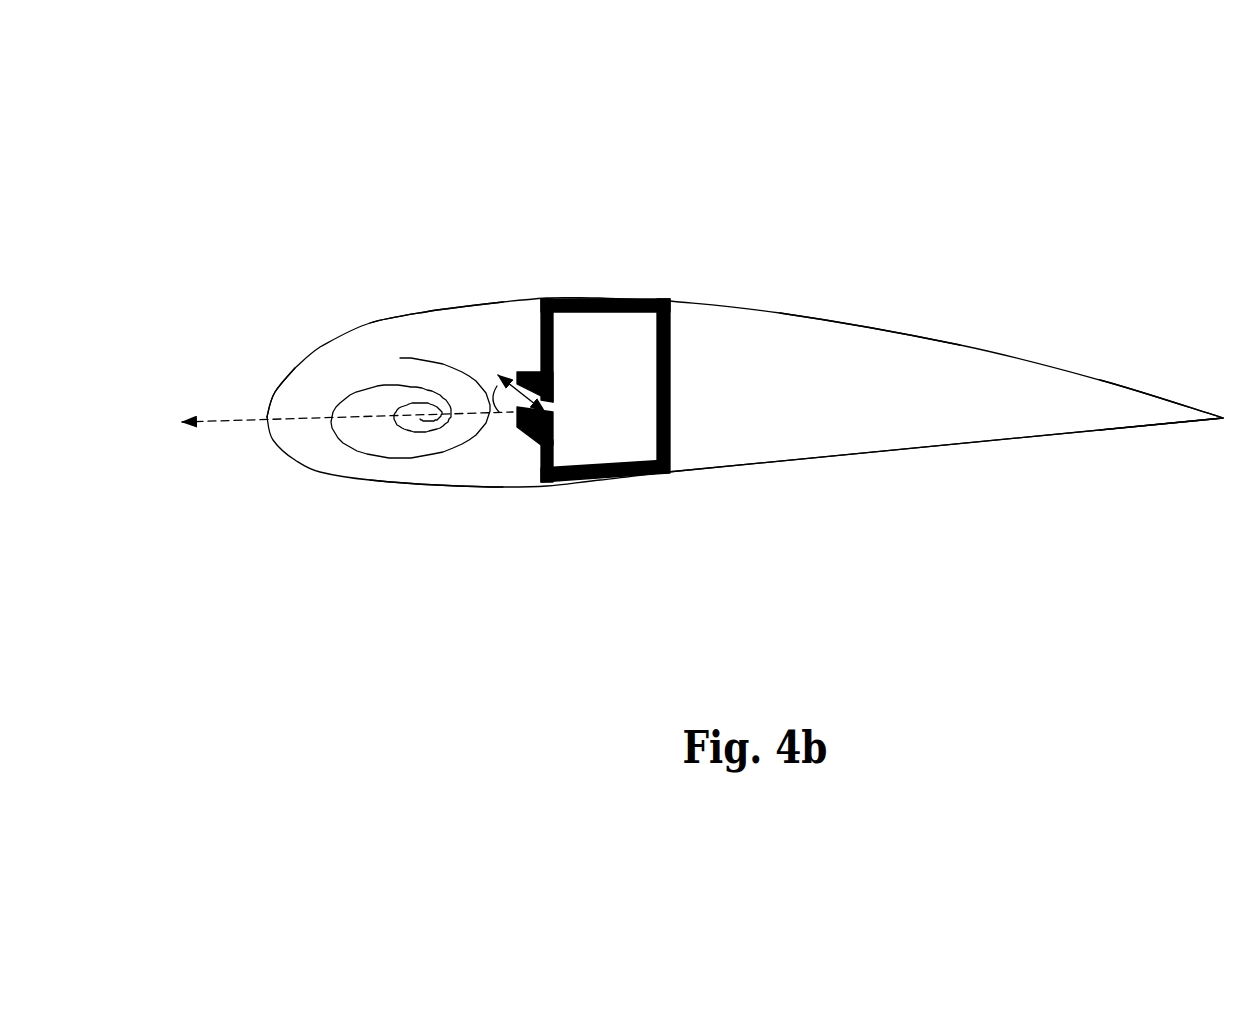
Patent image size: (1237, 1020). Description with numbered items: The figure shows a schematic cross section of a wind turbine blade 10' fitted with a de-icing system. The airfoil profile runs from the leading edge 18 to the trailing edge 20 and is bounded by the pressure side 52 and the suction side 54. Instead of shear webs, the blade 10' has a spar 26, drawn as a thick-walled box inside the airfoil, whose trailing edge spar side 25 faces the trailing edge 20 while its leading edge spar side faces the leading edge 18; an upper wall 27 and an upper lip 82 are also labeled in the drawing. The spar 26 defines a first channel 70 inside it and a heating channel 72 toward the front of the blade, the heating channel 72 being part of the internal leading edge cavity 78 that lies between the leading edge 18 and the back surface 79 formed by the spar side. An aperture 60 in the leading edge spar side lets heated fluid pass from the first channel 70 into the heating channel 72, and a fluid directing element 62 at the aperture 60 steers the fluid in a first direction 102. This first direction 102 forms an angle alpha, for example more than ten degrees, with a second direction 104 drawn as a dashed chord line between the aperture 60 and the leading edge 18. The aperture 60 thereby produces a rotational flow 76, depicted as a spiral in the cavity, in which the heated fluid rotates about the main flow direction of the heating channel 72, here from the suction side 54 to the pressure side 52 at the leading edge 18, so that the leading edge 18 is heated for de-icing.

The wind turbine blade 10' is at (745, 291).
The leading edge 18 is at (267, 416).
The trailing edge 20 is at (1223, 413).
The trailing edge spar side 25 is at (670, 410).
The spar 26 is at (658, 475).
The upper wall 27 is at (555, 343).
The pressure side 52 is at (933, 453).
The suction side 54 is at (866, 320).
The aperture 60 is at (555, 405).
The fluid directing element 62 is at (519, 430).
The first channel 70 is at (640, 338).
The heating channel 72 is at (430, 340).
The rotational flow 76 is at (417, 360).
The internal leading edge cavity 78 is at (437, 470).
The back surface 79 is at (542, 446).
The upper lip 82 is at (520, 370).
The first direction 102 is at (510, 373).
The second direction 104 is at (247, 424).